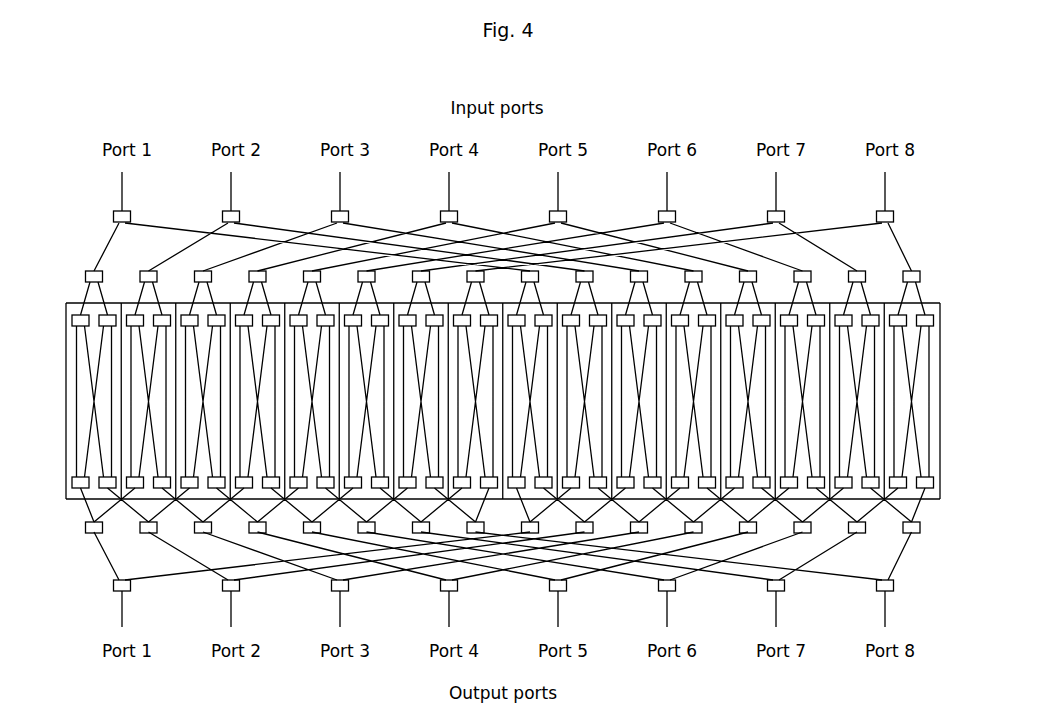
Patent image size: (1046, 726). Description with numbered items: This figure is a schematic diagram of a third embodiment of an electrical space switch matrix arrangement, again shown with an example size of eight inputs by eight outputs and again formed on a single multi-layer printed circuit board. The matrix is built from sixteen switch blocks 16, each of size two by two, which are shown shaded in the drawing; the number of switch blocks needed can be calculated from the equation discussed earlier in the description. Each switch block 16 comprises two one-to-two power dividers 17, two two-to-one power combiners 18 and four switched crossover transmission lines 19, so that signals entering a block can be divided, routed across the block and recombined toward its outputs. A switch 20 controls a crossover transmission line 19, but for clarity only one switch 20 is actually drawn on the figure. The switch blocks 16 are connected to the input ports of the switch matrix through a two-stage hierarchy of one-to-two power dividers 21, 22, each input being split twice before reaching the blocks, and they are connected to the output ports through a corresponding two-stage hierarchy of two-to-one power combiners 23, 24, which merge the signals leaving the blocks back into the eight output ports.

The switch block 16 is at (931, 303).
The 1:2 power divider 17 is at (67, 303).
The 2:1 power combiner 18 is at (67, 499).
The switched crossover transmission line 19 is at (83, 401).
The switch 20 is at (76, 418).
The 1:2 power divider 21 is at (87, 271).
The 1:2 power divider 22 is at (113, 217).
The 2:1 power combiner 23 is at (85, 533).
The 2:1 power combiner 24 is at (113, 584).